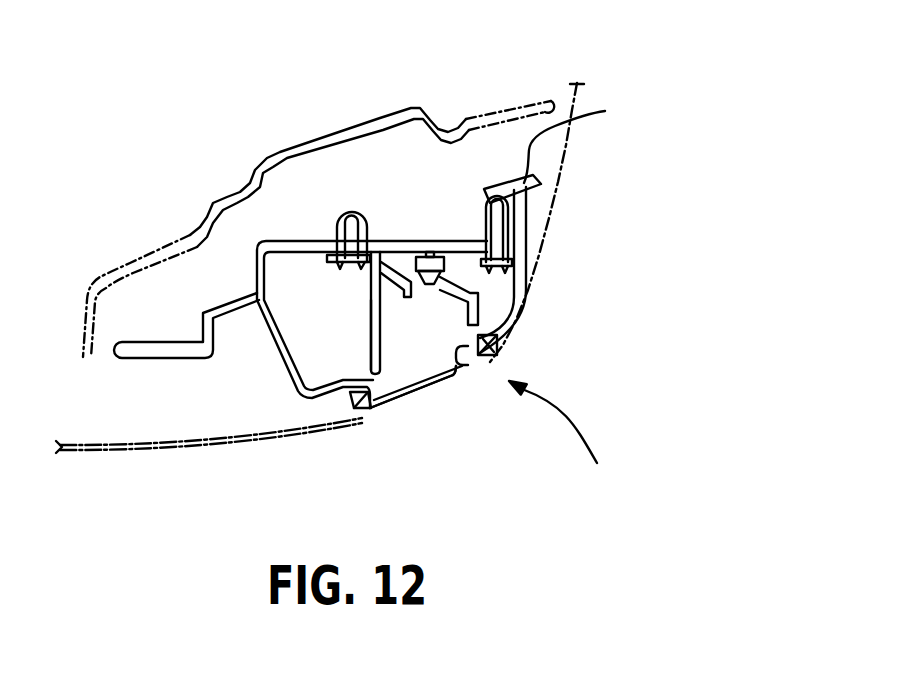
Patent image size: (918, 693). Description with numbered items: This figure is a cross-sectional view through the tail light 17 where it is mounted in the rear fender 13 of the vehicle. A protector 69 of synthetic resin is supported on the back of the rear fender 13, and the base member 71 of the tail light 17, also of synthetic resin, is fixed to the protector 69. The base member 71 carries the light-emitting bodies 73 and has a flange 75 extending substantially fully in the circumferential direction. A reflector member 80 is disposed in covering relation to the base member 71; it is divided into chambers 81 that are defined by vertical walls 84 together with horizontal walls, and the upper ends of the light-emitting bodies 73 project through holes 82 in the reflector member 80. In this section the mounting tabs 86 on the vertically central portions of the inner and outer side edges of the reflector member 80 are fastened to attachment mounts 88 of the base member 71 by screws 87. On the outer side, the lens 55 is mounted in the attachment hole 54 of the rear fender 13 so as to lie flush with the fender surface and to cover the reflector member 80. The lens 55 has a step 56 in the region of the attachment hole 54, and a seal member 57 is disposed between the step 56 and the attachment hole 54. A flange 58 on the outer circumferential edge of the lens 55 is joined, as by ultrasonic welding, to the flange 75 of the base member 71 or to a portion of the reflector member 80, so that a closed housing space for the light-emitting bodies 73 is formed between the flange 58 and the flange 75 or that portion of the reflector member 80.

The rear fender 13 is at (562, 150).
The tail light 17 is at (582, 436).
The attachment hole 54 is at (370, 410).
The lens 55 is at (447, 390).
The step 56 is at (460, 378).
The seal member 57 is at (350, 408).
The flange 58 is at (257, 305).
The protector 69 is at (465, 120).
The base member 71 is at (445, 242).
The light-emitting bodies 73 is at (433, 287).
The flange 75 is at (253, 291).
The reflector member 80 is at (383, 333).
The chambers 81 is at (433, 366).
The holes 82 is at (398, 251).
The vertical walls 84 is at (372, 355).
The mounting tabs 86 is at (340, 266).
The screws 87 is at (341, 270).
The attachment mounts 88 is at (351, 212).